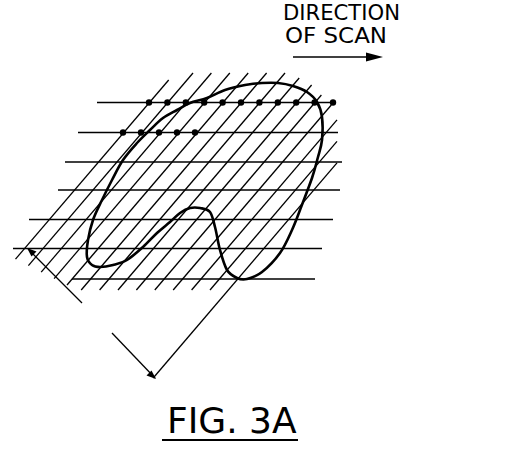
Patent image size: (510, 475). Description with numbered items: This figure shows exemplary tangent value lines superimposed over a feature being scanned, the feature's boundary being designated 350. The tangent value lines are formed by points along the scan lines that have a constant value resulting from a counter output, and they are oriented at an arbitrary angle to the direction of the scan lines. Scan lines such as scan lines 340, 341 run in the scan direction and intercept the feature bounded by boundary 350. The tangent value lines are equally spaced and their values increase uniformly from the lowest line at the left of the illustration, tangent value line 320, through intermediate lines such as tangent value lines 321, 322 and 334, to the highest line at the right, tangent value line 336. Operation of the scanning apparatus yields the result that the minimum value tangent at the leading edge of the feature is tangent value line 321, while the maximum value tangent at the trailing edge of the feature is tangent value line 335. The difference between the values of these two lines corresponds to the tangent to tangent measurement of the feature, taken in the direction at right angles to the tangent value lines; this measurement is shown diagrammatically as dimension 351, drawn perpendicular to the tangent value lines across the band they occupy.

The tangent value line 320 is at (140, 108).
The tangent value line 321 is at (176, 93).
The tangent value line 322 is at (209, 78).
The tangent value line 334 is at (327, 185).
The tangent value line 335 is at (318, 209).
The tangent value line 336 is at (291, 262).
The scan line 340 is at (106, 102).
The scan line 341 is at (90, 132).
The feature boundary 350 is at (306, 83).
The tangent to tangent dimension 351 is at (91, 313).